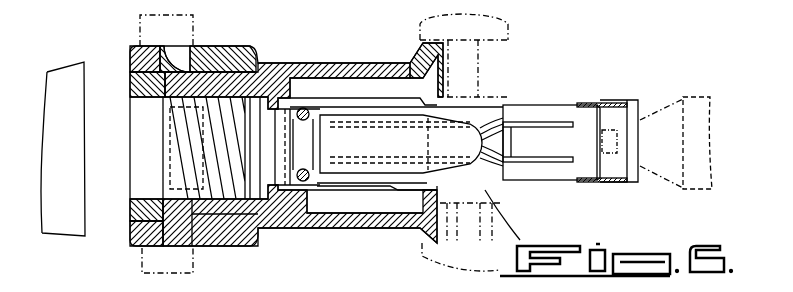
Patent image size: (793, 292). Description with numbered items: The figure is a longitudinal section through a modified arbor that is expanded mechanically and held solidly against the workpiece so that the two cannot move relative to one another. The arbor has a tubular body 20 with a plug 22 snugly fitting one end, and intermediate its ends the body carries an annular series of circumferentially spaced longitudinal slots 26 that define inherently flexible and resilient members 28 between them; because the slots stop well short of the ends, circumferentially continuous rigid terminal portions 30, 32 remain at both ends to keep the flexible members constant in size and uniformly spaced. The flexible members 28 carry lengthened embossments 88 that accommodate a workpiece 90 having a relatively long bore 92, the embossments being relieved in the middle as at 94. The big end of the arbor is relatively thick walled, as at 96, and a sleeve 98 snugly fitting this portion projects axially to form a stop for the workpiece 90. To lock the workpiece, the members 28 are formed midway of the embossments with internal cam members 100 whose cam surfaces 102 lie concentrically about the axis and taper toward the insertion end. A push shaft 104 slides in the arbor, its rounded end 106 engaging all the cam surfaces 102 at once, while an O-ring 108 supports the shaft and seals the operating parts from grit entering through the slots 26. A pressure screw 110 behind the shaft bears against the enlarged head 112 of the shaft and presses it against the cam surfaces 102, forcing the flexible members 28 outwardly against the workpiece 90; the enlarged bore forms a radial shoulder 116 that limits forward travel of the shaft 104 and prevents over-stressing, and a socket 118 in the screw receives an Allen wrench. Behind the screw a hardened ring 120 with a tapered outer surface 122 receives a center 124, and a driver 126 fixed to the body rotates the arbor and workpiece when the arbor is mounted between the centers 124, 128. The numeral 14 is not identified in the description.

The tubular body 20 is at (616, 78).
The plug 22 is at (630, 104).
The longitudinal slots 26 is at (547, 162).
The flexible members 28 is at (568, 104).
The rigid terminal portion 30 is at (600, 183).
The rigid terminal portion 32 is at (350, 188).
The embossments 88 is at (552, 104).
The workpiece 90 is at (490, 97).
The bore 92 is at (437, 70).
The relief 94 is at (493, 106).
The thick-walled end portion 96 is at (225, 72).
The sleeve 98 is at (262, 125).
The internal cam members 100 is at (493, 115).
The cam surfaces 102 is at (507, 132).
The push shaft 104 is at (377, 152).
The rounded end 106 is at (507, 147).
The O-ring 108 is at (396, 97).
The groove 14 is at (308, 101).
The pressure screw 110 is at (167, 148).
The enlarged head 112 is at (285, 72).
The radial shoulder 116 is at (262, 190).
The socket 118 is at (157, 127).
The hardened ring 120 is at (131, 80).
The tapered outer surface 122 is at (134, 97).
The center 124 is at (58, 80).
The driver 126 is at (140, 22).
The center 128 is at (675, 97).